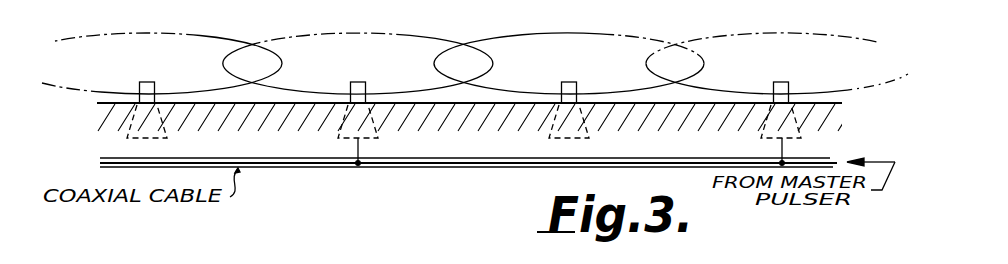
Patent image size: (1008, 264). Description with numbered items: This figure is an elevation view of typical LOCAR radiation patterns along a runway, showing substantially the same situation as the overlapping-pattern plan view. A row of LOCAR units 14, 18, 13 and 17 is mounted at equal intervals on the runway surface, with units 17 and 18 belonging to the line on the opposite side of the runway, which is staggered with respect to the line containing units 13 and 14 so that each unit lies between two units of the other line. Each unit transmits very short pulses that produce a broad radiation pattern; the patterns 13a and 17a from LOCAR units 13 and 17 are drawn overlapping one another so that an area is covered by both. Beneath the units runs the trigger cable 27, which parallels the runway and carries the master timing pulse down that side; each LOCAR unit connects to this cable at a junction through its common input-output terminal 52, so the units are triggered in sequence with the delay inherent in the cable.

The LOCAR unit 13 is at (562, 88).
The LOCAR unit 14 is at (137, 87).
The LOCAR unit 17 is at (773, 90).
The LOCAR unit 18 is at (351, 88).
The radiation pattern 13a is at (590, 33).
The radiation pattern 17a is at (787, 33).
The cable 27 is at (384, 168).
The common input-output terminal 52 is at (358, 150).